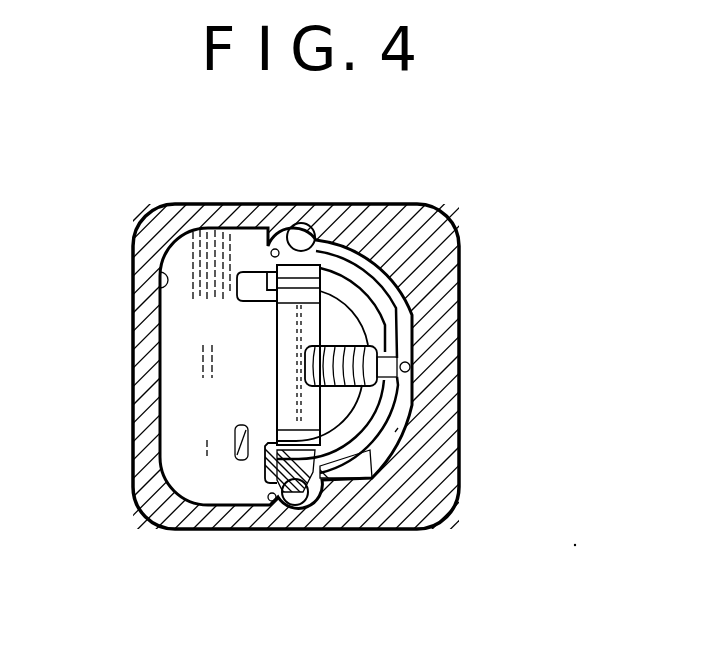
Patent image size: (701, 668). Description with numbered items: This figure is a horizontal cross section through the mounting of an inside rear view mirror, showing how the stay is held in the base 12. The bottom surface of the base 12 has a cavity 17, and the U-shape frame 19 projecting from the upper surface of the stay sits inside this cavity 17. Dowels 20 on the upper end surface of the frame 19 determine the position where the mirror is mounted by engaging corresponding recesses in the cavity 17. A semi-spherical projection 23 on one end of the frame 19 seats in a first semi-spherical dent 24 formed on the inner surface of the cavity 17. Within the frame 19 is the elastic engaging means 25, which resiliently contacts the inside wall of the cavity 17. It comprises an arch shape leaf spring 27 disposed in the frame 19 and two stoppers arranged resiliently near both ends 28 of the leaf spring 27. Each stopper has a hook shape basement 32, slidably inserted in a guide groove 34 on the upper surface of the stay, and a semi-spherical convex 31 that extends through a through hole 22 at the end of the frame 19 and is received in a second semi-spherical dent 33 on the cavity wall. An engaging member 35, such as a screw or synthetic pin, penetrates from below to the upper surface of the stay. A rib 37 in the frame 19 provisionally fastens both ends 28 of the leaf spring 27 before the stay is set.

The base 12 is at (449, 213).
The cavity 17 is at (158, 273).
The U-shape frame 19 is at (372, 478).
The dowels 20 is at (273, 249).
The through hole 22 is at (312, 500).
The semi-spherical projection 23 is at (413, 330).
The first semi-spherical dent 24 is at (412, 367).
The elastic engaging means 25 is at (277, 400).
The arch shape leaf spring 27 is at (398, 428).
The ends of the leaf spring 28 is at (277, 418).
The semi-spherical convex 31 is at (336, 250).
The hook shape basement 32 is at (277, 302).
The second semi-spherical dents 33 is at (297, 222).
The guide groove 34 is at (277, 375).
The engaging member 35 is at (305, 346).
The rib 37 is at (240, 270).